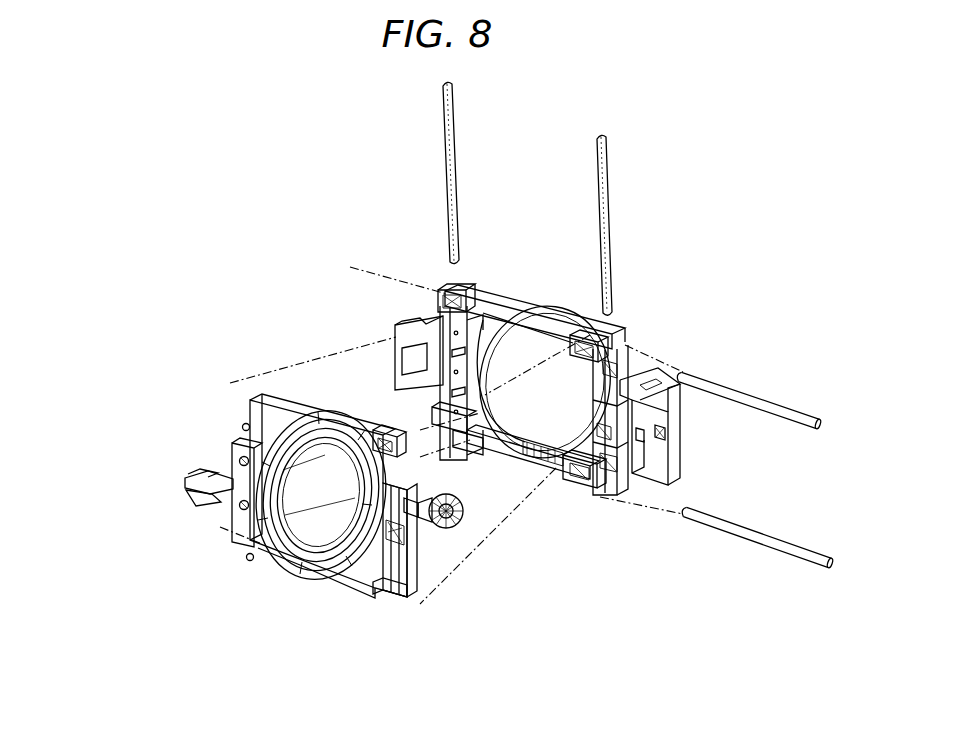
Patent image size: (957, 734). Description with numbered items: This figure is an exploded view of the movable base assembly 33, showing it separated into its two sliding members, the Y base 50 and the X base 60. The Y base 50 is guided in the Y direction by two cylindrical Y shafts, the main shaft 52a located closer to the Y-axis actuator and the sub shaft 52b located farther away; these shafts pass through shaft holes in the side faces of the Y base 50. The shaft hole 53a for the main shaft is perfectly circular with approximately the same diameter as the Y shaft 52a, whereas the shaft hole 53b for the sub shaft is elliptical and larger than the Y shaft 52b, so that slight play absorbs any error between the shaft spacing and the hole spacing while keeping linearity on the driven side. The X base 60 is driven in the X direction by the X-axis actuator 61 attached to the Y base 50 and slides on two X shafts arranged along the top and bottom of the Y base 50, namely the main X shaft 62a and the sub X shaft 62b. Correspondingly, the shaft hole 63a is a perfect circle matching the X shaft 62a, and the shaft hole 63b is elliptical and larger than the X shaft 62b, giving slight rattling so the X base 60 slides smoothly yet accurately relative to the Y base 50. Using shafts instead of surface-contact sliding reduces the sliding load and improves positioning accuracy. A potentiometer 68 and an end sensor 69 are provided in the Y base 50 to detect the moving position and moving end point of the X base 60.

The movable base assembly 33 is at (415, 138).
The Y base 50 is at (510, 300).
The Y shaft (main shaft) 52a is at (456, 163).
The Y shaft (sub shaft) 52b is at (607, 212).
The shaft hole for main shaft 53a is at (450, 293).
The shaft hole for sub shaft 53b is at (605, 345).
The X base 60 is at (252, 416).
The X-axis actuator 61 is at (650, 440).
The X shaft (main shaft) 62a is at (745, 390).
The X shaft (sub shaft) 62b is at (745, 528).
The shaft hole for main shaft 63a is at (410, 412).
The shaft hole for sub shaft 63b is at (400, 588).
The potentiometer 68 is at (577, 476).
The end sensor 69 is at (565, 465).